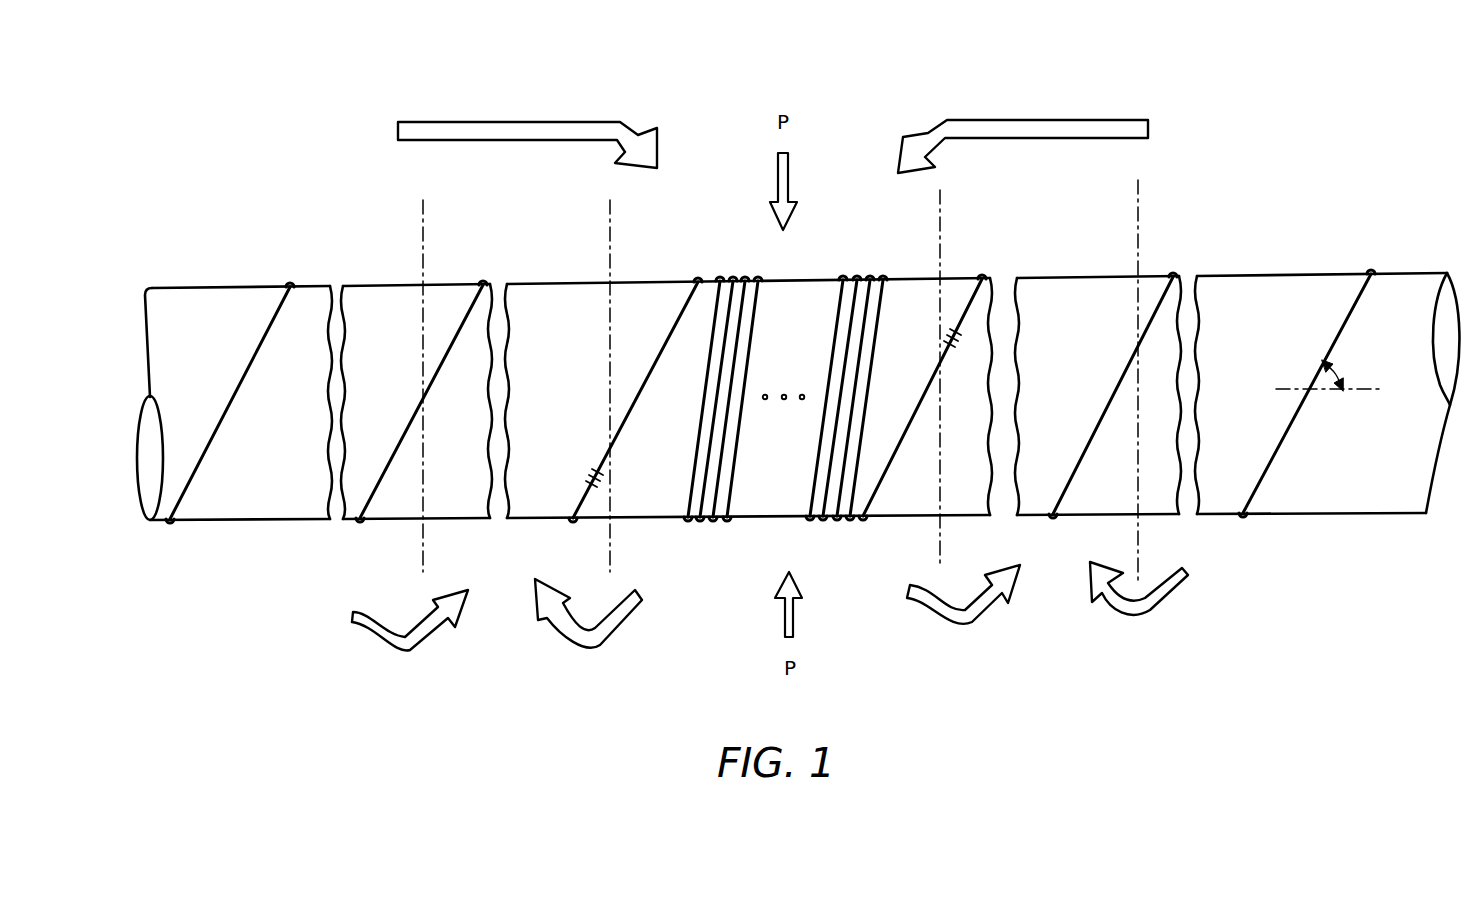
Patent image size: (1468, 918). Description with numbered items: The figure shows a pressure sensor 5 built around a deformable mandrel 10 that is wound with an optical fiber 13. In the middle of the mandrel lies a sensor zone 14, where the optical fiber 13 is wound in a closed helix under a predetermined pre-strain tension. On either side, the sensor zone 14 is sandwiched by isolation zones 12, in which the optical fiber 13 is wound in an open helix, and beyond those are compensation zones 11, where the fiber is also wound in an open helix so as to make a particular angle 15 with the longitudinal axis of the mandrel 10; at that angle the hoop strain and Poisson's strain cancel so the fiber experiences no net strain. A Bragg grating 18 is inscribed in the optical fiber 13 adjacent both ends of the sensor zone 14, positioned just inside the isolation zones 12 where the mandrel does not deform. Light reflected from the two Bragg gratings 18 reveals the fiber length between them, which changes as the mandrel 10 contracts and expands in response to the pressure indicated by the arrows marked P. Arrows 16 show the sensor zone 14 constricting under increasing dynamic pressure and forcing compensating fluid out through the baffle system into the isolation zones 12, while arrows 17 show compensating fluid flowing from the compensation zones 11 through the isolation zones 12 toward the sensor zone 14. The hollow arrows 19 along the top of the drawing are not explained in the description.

The pressure sensor 5 is at (1255, 200).
The deformable mandrel 10 is at (167, 333).
The compensation zone 11 is at (279, 273).
The isolation zone 12 is at (449, 281).
The optical fiber 13 is at (210, 457).
The sensor zone 14 is at (649, 282).
The particular angle 15 is at (1335, 374).
The arrows indicating sensor zone constriction flow 16 is at (372, 635).
The arrows indicating compensating fluid flow 17 is at (618, 626).
The Bragg grating 18 is at (596, 480).
The feed direction arrow 19 is at (448, 122).